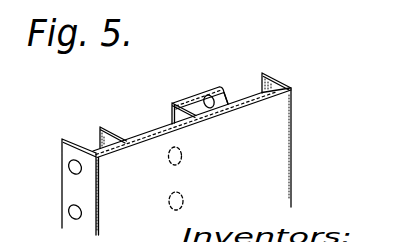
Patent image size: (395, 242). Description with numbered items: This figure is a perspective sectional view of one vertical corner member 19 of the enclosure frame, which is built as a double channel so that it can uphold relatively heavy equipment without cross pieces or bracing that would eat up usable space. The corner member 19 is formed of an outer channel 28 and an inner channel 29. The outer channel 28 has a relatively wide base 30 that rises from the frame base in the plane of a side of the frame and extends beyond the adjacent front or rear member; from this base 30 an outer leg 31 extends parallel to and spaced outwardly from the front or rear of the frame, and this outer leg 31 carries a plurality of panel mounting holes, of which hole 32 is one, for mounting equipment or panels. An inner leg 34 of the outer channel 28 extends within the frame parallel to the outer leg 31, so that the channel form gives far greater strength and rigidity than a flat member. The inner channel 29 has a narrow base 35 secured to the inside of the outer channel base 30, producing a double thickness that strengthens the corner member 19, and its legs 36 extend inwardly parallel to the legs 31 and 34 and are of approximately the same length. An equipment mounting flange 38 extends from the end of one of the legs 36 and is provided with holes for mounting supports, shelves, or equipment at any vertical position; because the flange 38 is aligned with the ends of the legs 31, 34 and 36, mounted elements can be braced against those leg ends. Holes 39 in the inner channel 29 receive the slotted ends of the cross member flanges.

The vertical corner member 19 is at (65, 133).
The outer channel 28 is at (292, 86).
The inner channel 29 is at (124, 140).
The base of outer channel 30 is at (276, 143).
The outer leg 31 is at (67, 149).
The mounting hole 32 is at (71, 174).
The inner leg 34 is at (272, 75).
The narrow base 35 is at (174, 106).
The legs of inner channel 36 is at (101, 132).
The equipment mounting flange 38 is at (204, 94).
The holes in inner channel 39 is at (226, 95).